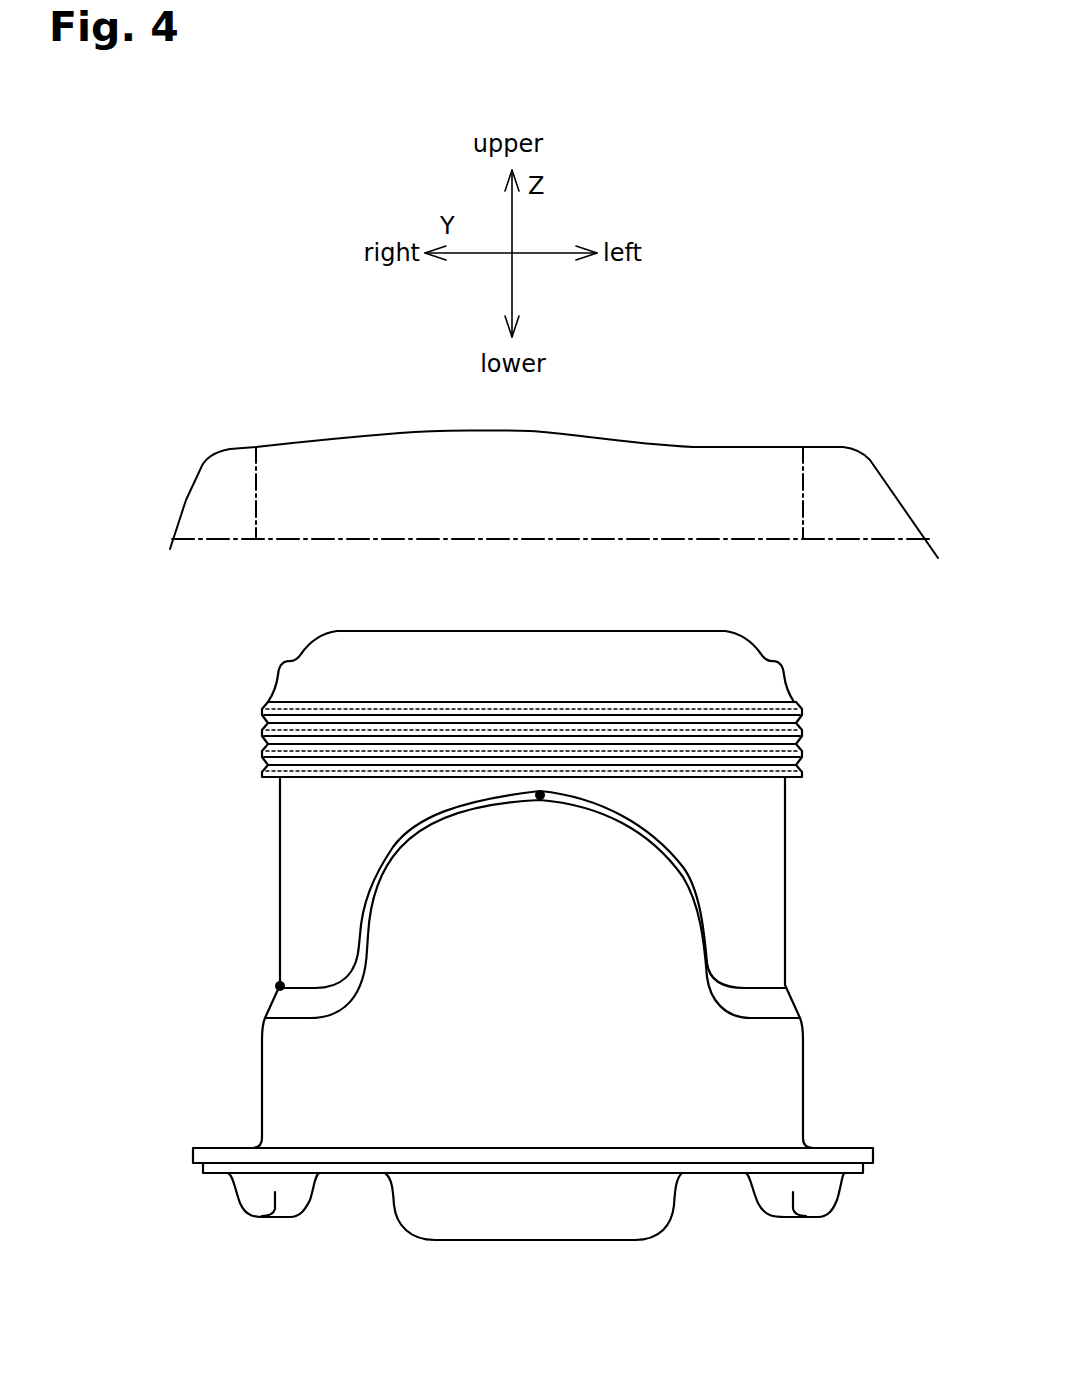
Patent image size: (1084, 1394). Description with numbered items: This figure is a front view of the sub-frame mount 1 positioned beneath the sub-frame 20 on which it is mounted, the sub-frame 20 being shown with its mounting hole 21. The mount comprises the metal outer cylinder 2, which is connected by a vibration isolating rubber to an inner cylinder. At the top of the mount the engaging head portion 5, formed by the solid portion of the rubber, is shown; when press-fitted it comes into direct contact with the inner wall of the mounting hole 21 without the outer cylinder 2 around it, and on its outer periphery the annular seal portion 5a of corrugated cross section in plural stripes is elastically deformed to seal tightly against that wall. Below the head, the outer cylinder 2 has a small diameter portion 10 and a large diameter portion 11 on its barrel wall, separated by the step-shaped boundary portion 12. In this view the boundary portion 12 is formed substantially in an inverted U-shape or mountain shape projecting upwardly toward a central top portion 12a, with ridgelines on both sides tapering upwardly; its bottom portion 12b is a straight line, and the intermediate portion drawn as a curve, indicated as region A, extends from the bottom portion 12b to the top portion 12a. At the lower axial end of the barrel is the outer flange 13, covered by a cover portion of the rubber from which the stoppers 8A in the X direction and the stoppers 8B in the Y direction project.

The sub-frame mount 1 is at (770, 614).
The outer cylinder 2 is at (897, 833).
The engaging head portion 5 is at (412, 638).
The annular seal portion 5a is at (262, 727).
The stopper 8A is at (485, 1222).
The stopper 8B is at (255, 1205).
The small diameter portion 10 is at (755, 843).
The large diameter portion 11 is at (758, 1043).
The boundary portion 12 is at (698, 888).
The central top portion 12a is at (540, 790).
The bottom portion 12b is at (280, 985).
The outer flange 13 is at (850, 1148).
The sub-frame 20 is at (866, 470).
The mounting hole 21 is at (787, 502).
The region A of arch wall A is at (505, 783).